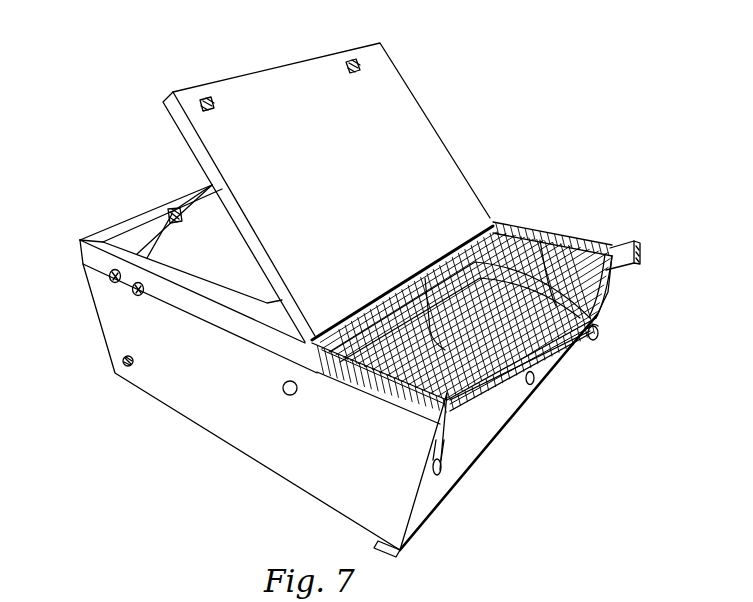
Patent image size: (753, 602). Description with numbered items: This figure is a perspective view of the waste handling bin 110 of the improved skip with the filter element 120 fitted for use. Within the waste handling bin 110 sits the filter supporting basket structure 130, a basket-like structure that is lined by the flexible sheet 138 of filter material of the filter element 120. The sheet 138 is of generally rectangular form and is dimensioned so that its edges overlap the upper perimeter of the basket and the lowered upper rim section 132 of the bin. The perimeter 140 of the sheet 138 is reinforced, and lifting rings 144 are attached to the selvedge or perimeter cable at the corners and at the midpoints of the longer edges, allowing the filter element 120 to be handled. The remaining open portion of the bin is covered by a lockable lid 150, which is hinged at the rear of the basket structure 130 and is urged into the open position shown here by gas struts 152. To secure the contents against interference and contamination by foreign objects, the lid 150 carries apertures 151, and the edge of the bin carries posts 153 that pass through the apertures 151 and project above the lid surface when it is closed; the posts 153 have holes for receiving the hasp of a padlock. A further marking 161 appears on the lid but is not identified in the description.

The waste handling bin 110 is at (560, 95).
The filter element 120 is at (485, 368).
The filter supporting basket structure 130 is at (463, 368).
The lowered upper rim section 132 is at (523, 420).
The flexible sheet of filter material 138 is at (510, 247).
The perimeter of the sheet 140 is at (340, 400).
The lifting rings 144 is at (284, 393).
The lockable lid 150 is at (323, 176).
The apertures 151 is at (203, 101).
The latch 161 is at (360, 66).
The gas struts 152 is at (170, 210).
The posts 153 is at (120, 222).